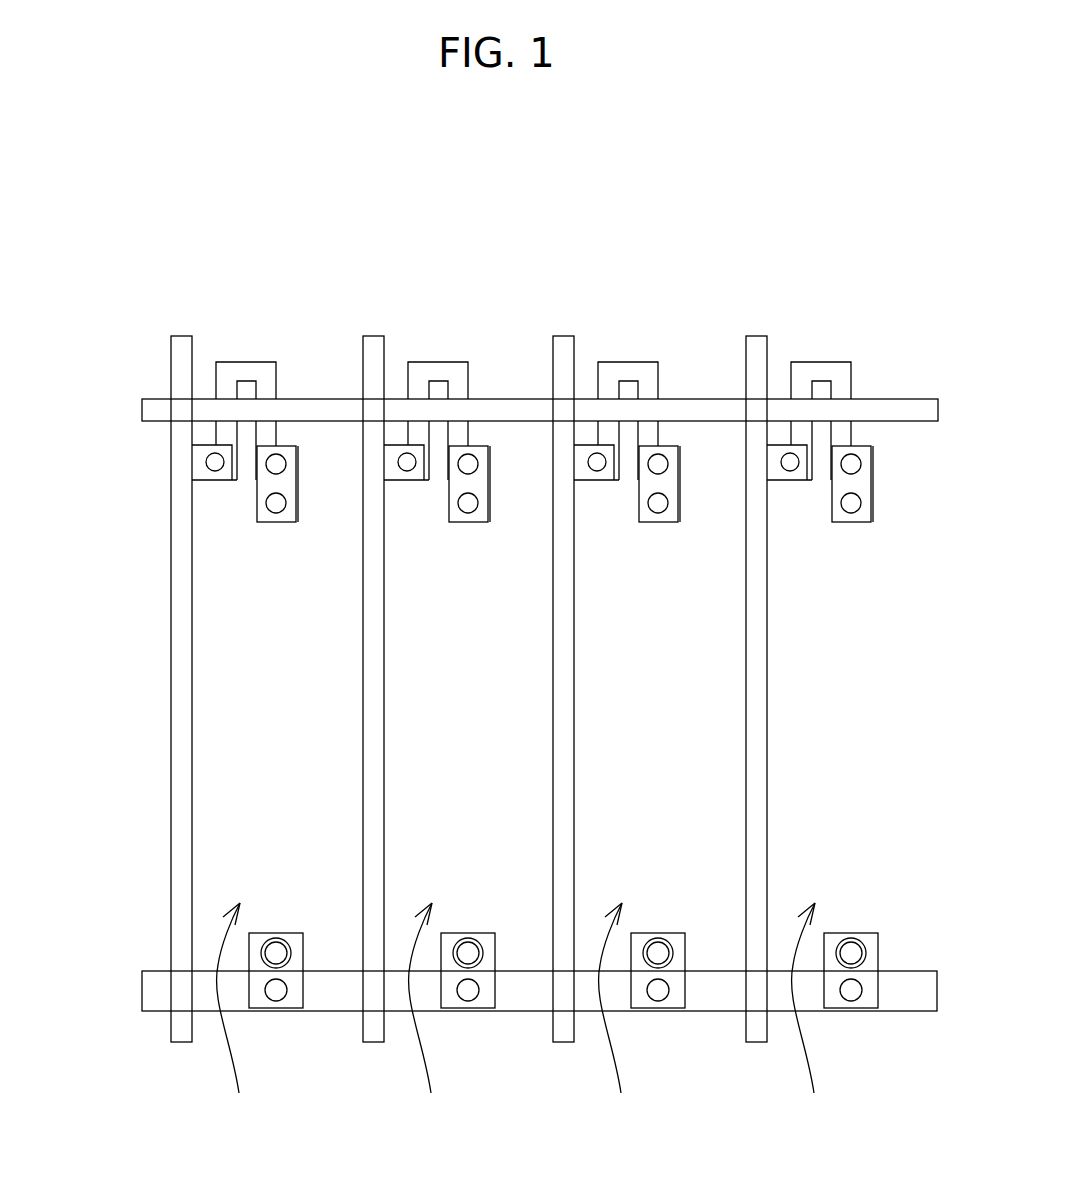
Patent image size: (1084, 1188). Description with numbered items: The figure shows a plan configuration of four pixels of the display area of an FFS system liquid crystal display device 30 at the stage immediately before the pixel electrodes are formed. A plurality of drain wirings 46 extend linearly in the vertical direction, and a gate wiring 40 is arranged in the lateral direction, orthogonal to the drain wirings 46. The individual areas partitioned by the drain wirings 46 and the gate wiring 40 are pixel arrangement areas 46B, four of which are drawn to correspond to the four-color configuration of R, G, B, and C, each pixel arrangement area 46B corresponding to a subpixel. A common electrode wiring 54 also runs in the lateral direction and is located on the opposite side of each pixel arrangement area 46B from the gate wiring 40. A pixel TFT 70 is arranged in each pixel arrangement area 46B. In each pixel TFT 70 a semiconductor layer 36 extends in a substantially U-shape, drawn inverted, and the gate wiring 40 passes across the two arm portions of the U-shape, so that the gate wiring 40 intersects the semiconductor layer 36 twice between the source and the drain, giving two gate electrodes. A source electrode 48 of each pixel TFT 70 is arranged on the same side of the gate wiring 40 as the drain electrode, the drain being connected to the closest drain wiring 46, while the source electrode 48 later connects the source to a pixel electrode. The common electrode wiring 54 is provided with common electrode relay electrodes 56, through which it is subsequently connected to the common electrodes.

The FFS system liquid crystal display device 30 is at (346, 213).
The semiconductor layer 36 is at (237, 372).
The gate wiring 40 is at (148, 412).
The drain wiring 46 is at (181, 1037).
The pixel arrangement area 46B is at (528, 1020).
The source electrode 48 is at (292, 522).
The common electrode wiring 54 is at (155, 985).
The common electrode relay electrode 56 is at (297, 937).
The pixel TFT 70 is at (278, 348).